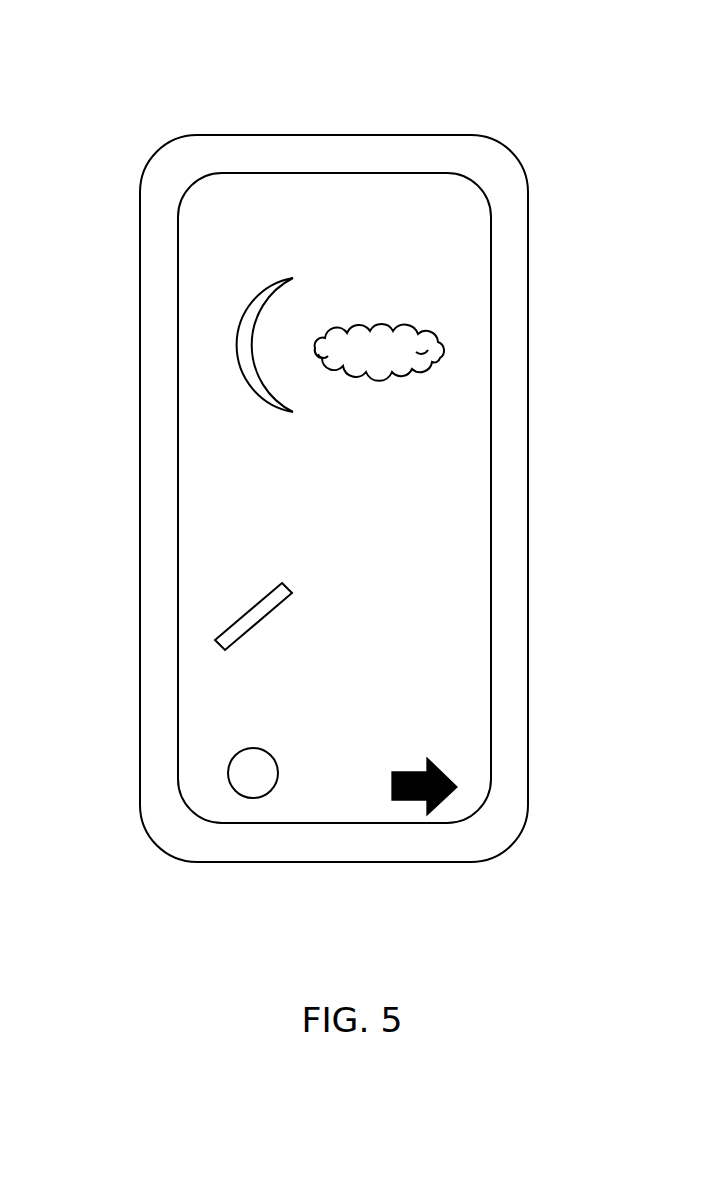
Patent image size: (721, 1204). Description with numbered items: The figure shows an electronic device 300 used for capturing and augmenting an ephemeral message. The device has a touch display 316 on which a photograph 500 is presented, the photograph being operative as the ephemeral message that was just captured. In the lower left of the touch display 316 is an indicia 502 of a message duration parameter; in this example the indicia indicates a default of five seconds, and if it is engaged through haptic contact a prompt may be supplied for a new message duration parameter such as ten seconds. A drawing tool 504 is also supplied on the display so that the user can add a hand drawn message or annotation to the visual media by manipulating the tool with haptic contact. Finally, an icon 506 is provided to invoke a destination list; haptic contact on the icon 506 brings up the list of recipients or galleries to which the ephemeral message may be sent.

The electronic device 300 is at (134, 103).
The touch display 316 is at (472, 235).
The photograph 500 is at (443, 373).
The indicia of a message duration parameter 502 is at (258, 798).
The drawing tool 504 is at (255, 603).
The icon 506 is at (413, 798).